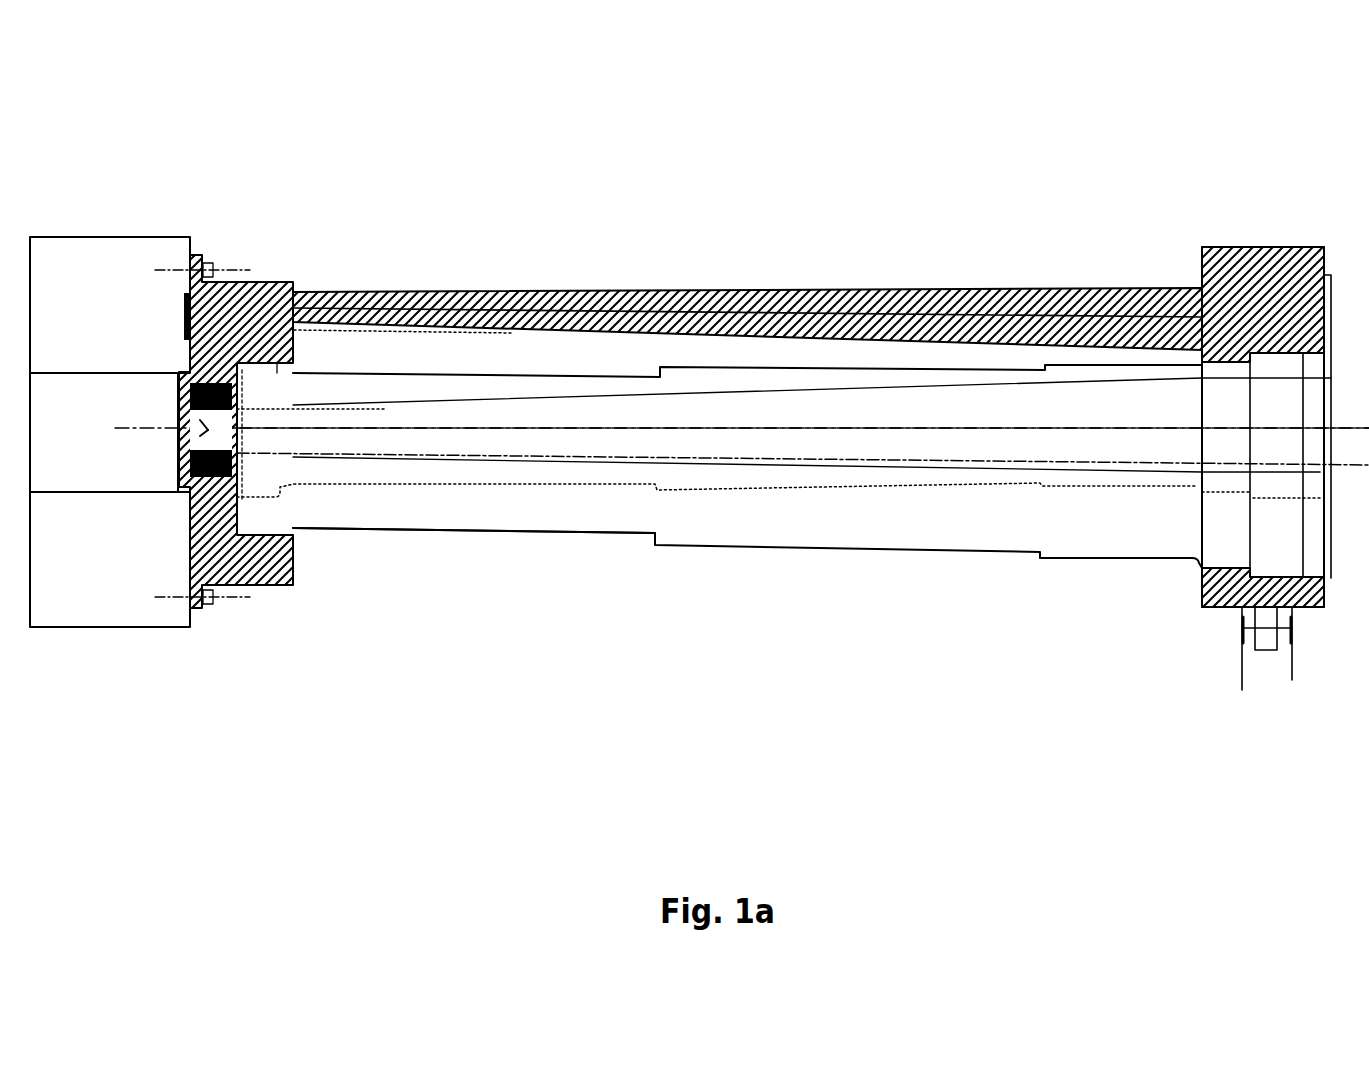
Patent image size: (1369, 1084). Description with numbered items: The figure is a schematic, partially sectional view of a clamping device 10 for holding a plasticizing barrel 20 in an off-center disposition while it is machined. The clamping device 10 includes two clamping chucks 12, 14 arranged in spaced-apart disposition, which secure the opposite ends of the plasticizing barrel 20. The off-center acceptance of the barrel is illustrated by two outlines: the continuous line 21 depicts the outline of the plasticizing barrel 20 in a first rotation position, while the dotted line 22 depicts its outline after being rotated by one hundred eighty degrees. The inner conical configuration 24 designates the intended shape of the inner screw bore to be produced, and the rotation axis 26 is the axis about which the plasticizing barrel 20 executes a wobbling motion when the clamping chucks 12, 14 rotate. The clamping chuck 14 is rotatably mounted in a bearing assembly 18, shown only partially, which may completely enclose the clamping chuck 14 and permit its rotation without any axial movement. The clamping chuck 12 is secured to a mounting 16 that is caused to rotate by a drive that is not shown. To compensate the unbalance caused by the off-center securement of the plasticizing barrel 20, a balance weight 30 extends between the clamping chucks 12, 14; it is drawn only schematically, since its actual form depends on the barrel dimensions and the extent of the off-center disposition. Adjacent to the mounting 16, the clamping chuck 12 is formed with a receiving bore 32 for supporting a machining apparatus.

The clamping device 10 is at (943, 617).
The clamping chuck 12 is at (262, 585).
The clamping chuck 14 is at (1277, 247).
The mounting 16 is at (122, 252).
The bearing assembly 18 is at (1273, 685).
The plasticizing barrel 20 is at (752, 520).
The continuous line 21 is at (552, 527).
The dotted line 22 is at (473, 482).
The inner conical configuration 24 is at (420, 457).
The rotation axis 26 is at (375, 428).
The balance weight 30 is at (619, 290).
The receiving bore 32 is at (218, 365).